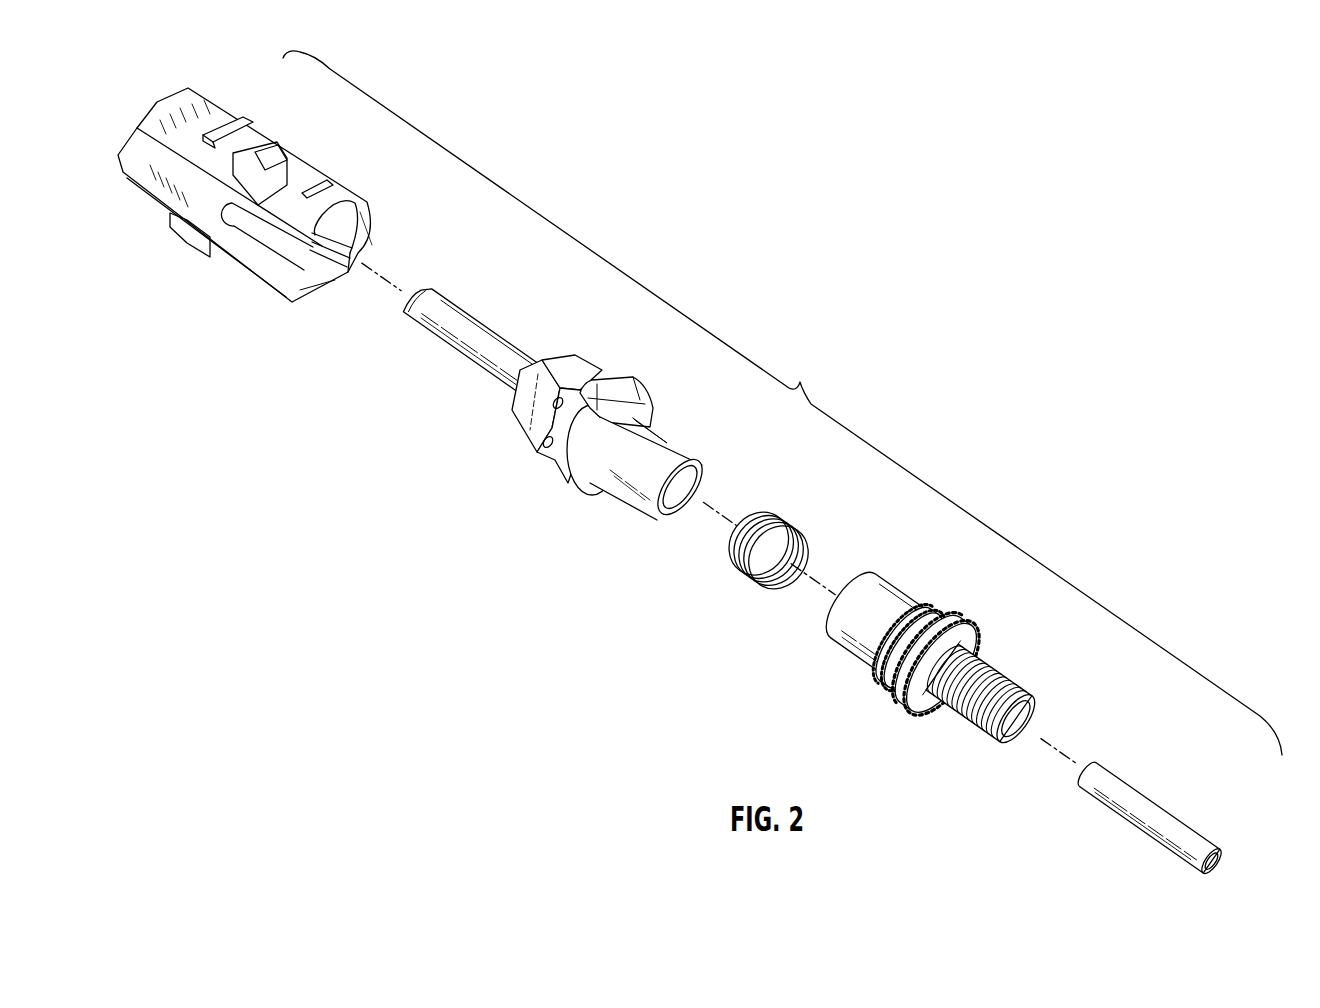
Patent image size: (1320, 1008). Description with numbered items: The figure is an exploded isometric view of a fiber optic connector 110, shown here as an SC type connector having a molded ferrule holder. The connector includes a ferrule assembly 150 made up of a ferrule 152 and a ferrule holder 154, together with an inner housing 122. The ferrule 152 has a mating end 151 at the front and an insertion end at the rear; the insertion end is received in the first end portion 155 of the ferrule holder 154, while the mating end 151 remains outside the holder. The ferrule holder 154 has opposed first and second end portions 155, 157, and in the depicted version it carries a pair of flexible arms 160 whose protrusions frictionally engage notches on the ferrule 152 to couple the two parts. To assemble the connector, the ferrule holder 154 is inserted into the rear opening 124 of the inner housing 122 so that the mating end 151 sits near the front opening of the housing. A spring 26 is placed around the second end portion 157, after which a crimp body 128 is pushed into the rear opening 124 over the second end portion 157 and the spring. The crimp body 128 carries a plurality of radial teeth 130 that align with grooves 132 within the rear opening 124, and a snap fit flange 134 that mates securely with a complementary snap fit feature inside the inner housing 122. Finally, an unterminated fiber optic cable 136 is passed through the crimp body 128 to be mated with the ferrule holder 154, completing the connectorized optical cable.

The fiber optic connector 110 is at (782, 403).
The inner housing 122 is at (232, 262).
The rear opening 124 is at (314, 288).
The grooves 132 is at (368, 258).
The ferrule assembly 150 is at (564, 423).
The mating end 151 is at (414, 276).
The ferrule 152 is at (463, 335).
The ferrule holder 154 is at (632, 480).
The first end portion 155 is at (535, 355).
The second end portion 157 is at (680, 510).
The flexible arms 160 is at (617, 387).
The spring 26 is at (780, 522).
The crimp body 128 is at (897, 585).
The radial teeth 130 is at (912, 690).
The snap fit flange 134 is at (947, 615).
The fiber optic cable 136 is at (1140, 790).